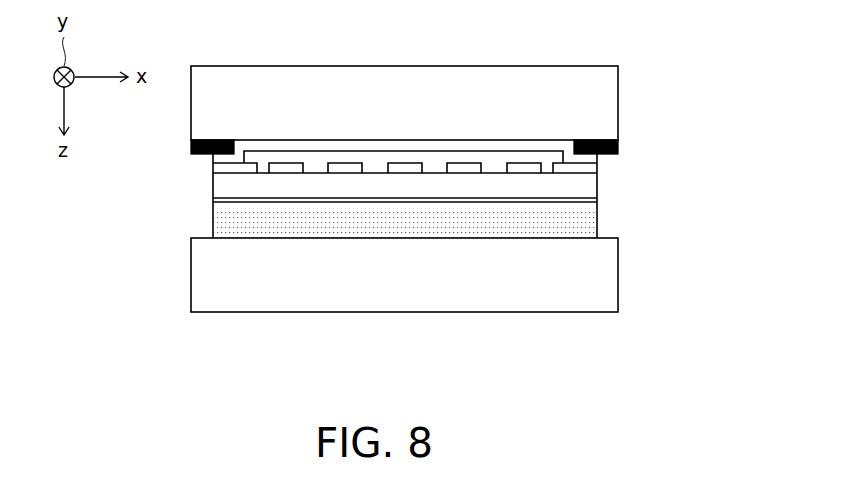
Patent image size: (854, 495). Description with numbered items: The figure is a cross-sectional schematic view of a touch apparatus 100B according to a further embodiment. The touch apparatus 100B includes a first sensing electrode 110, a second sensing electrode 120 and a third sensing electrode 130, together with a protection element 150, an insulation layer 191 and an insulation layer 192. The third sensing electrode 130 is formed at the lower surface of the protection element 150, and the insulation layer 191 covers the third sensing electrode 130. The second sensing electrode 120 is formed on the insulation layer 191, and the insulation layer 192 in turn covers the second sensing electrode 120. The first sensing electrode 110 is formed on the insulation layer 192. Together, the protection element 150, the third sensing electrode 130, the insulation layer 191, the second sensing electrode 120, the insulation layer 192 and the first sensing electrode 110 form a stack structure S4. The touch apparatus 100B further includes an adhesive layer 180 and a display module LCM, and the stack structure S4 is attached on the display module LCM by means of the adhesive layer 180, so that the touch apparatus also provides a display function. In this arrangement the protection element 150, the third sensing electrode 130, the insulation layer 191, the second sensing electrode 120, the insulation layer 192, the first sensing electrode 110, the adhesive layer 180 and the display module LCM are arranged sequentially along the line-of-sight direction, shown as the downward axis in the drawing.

The protection element 150 is at (605, 100).
The third sensing electrode 130 is at (590, 161).
The insulation layer 191 is at (597, 173).
The second sensing electrode 120 is at (528, 168).
The insulation layer 192 is at (587, 191).
The first sensing electrode 110 is at (588, 200).
The adhesive layer 180 is at (222, 224).
The display module LCM is at (605, 297).
The stack structure S4 is at (687, 269).
The touch apparatus 100B is at (433, 229).